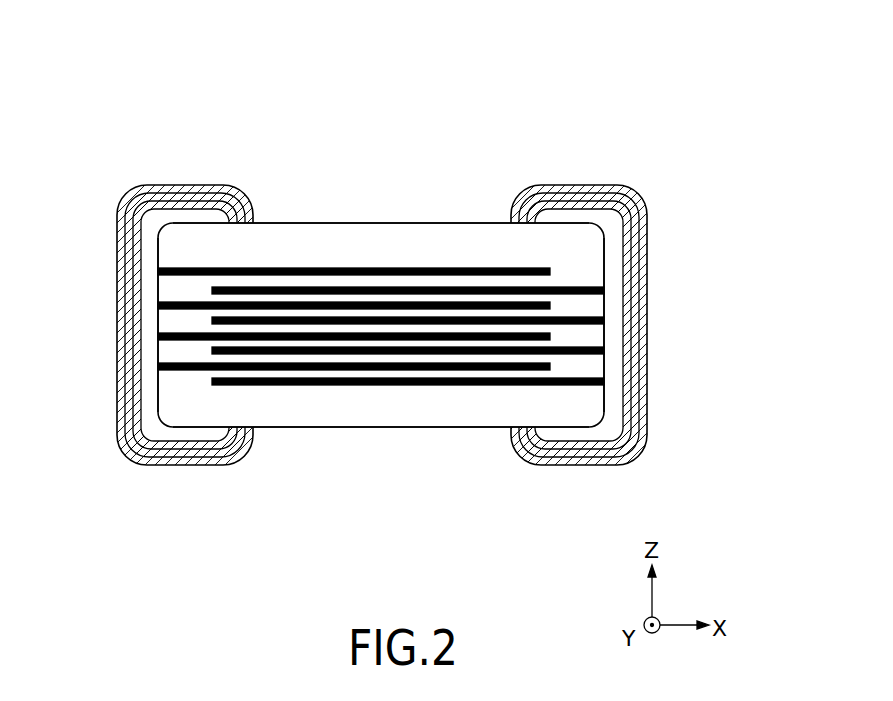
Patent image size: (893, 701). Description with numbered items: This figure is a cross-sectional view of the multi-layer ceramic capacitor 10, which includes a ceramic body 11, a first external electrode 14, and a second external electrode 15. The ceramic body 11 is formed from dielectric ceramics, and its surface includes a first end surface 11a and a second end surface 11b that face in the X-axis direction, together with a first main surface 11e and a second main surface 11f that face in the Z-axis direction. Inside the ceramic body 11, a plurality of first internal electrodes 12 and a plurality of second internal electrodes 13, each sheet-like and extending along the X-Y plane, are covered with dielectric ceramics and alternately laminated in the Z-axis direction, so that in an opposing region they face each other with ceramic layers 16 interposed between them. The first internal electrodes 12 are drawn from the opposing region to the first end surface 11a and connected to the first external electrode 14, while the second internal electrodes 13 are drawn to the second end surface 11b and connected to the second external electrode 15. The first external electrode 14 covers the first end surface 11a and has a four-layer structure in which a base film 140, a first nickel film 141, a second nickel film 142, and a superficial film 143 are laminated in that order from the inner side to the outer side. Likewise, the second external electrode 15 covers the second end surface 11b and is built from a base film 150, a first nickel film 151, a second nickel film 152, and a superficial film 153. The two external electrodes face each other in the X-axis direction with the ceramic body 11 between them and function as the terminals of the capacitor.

The multi-layer ceramic capacitor 10 is at (110, 62).
The ceramic body 11 is at (390, 170).
The first end surface 11a is at (150, 327).
The second end surface 11b is at (612, 328).
The first main surface 11e is at (353, 223).
The second main surface 11f is at (338, 428).
The first internal electrodes 12 is at (308, 363).
The second internal electrodes 13 is at (440, 378).
The first external electrode 14 is at (285, 139).
The second external electrode 15 is at (698, 139).
The ceramic layers 16 is at (425, 312).
The base film 140 is at (120, 192).
The first nickel film 141 is at (150, 190).
The second nickel film 142 is at (196, 192).
The superficial film 143 is at (232, 188).
The base film 150 is at (640, 195).
The first nickel film 151 is at (600, 190).
The second nickel film 152 is at (560, 190).
The superficial film 153 is at (525, 191).